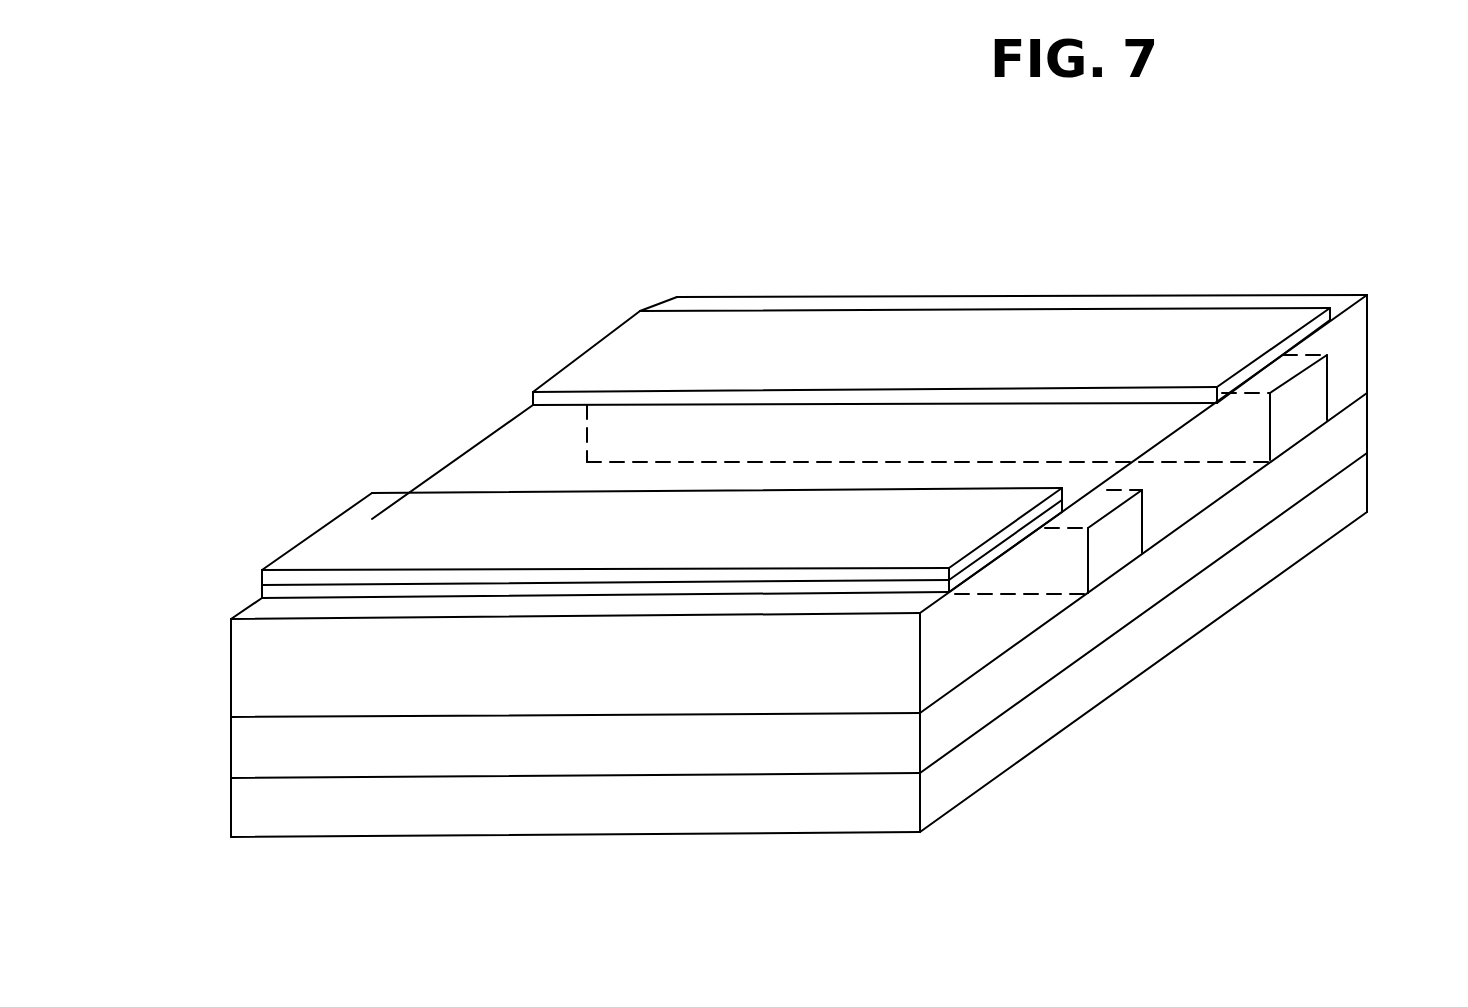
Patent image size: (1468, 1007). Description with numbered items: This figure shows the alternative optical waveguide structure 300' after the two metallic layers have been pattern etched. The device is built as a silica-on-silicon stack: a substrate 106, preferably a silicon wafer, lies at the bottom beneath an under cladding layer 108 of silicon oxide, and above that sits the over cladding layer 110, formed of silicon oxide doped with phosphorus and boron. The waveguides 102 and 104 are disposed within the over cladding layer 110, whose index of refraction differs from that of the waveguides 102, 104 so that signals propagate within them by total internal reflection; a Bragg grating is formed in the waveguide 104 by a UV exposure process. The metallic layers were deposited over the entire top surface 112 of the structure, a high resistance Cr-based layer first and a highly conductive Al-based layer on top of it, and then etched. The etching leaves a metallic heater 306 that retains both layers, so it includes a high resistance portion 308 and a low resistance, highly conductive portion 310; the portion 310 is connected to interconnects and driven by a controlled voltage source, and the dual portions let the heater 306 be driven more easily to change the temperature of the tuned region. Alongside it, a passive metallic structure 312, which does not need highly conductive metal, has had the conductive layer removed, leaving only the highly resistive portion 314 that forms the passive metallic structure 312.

The optical waveguide structure after etch 300' is at (797, 473).
The waveguide 102 is at (1297, 423).
The waveguide 104 is at (1113, 549).
The substrate 106 is at (995, 765).
The under cladding layer 108 is at (243, 765).
The over cladding layer 110 is at (243, 682).
The top surface 112 is at (1332, 302).
The metallic heater 306 is at (290, 520).
The high resistance portion 308 is at (990, 558).
The low resistance portion 310 is at (382, 497).
The passive metallic structure 312 is at (612, 292).
The highly resistive portion 314 is at (1017, 330).